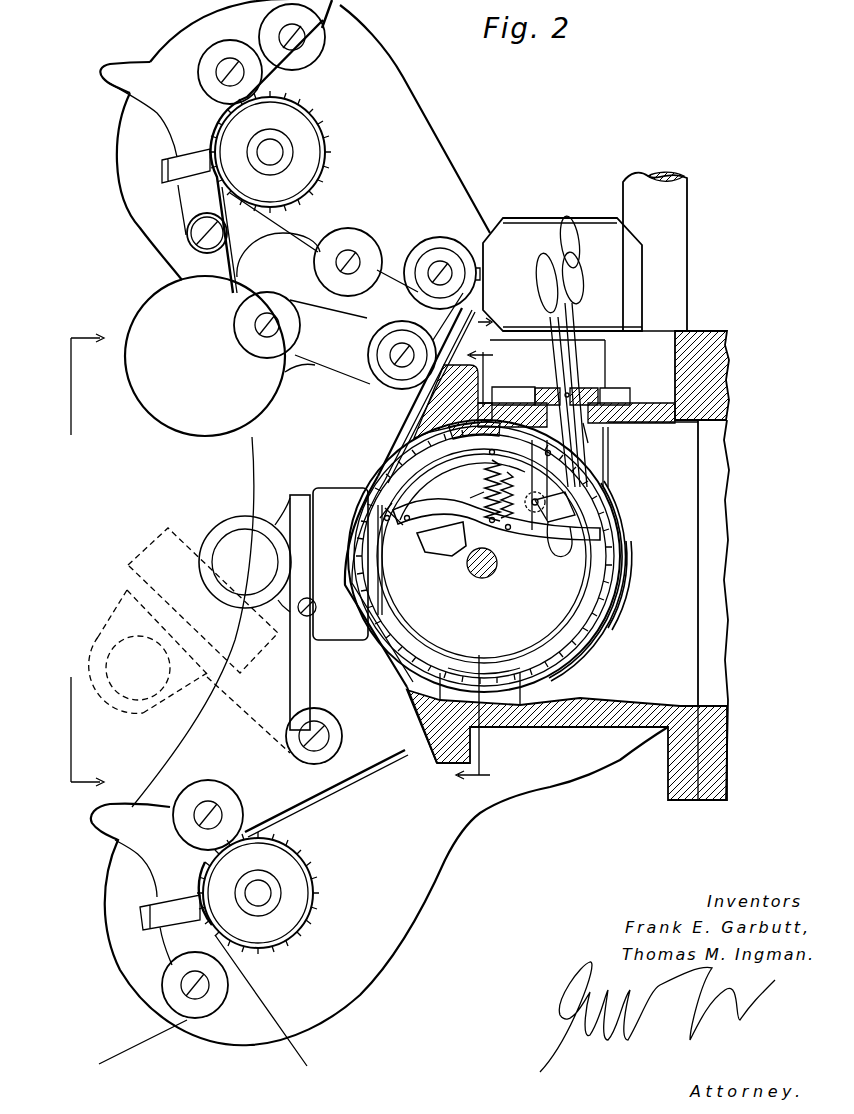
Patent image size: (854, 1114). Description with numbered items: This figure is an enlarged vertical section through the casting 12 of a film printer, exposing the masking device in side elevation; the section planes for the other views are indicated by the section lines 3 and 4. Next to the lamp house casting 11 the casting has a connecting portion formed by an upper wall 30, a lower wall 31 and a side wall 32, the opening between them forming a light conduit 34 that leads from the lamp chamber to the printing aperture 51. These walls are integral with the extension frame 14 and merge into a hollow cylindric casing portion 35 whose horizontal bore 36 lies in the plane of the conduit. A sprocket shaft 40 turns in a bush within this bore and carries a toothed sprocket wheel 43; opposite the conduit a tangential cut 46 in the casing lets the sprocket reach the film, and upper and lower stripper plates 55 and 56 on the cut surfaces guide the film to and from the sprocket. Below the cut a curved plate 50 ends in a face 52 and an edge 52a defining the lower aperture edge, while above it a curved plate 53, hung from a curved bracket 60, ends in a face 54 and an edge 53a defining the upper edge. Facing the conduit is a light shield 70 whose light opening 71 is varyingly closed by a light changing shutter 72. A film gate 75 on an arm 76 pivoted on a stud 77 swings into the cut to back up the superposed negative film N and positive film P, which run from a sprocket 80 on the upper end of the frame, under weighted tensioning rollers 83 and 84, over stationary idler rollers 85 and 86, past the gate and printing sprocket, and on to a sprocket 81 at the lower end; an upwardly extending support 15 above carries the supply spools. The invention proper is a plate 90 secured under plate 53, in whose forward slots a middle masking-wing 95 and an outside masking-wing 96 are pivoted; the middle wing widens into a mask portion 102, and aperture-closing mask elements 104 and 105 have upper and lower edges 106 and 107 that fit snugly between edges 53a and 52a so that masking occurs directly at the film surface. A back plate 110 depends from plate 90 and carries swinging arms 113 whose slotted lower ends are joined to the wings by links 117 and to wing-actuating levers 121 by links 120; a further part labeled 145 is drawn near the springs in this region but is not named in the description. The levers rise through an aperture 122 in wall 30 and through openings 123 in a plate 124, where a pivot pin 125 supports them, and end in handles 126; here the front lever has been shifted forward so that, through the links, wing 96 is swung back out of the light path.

The lamp house casting 11 is at (718, 385).
The casting 12 is at (558, 782).
The extension frame 14 is at (280, 455).
The upwardly extending support 15 is at (668, 255).
The upper wall 30 is at (662, 425).
The lower wall 31 is at (608, 708).
The side wall 32 is at (659, 521).
The light conduit 34 is at (686, 642).
The hollow cylindric casing portion 35 is at (510, 722).
The horizontal bore 36 is at (552, 695).
The sprocket shaft 40 is at (490, 578).
The sprocket wheel 43 is at (455, 642).
The rectangular opening or cut 46 is at (380, 682).
The curved plate 50 is at (392, 645).
The printing aperture 51 is at (380, 580).
The face 52 is at (352, 588).
The lower plate edge 52a is at (372, 595).
The curved plate 53 is at (420, 467).
The lower edge of plate 53 53a is at (375, 545).
The face 54 is at (358, 540).
The upper stripper plate 55 is at (410, 428).
The lower stripper plate 56 is at (430, 765).
The curved bracket 60 is at (498, 403).
The light shield 70 is at (610, 512).
The light opening 71 is at (600, 640).
The light changing shutter 72 is at (628, 582).
The film gate 75 is at (190, 552).
The arm 76 is at (315, 677).
The stud 77 is at (300, 762).
The sprocket 80 is at (300, 132).
The sprocket 81 is at (290, 885).
The tensioning roller 83 is at (250, 325).
The tensioning roller 84 is at (368, 252).
The stationary idler roller 85 is at (375, 363).
The stationary idler roller 86 is at (437, 258).
The plate 90 is at (420, 485).
The middle masking-wing 95 is at (375, 556).
The masking-wing 96 is at (443, 566).
The mask portion 102 is at (375, 568).
The aperture-closing mask element 104 is at (452, 560).
The aperture-closing mask element 105 is at (395, 590).
The upper edge 106 is at (355, 552).
The lower edge 107 is at (355, 572).
The back plate 110 is at (530, 475).
The swinging arm 113 is at (520, 510).
The link 117 is at (480, 525).
The link 120 is at (551, 533).
The wing-actuating lever 121 is at (618, 468).
The aperture 122 is at (588, 442).
The opening 123 is at (572, 390).
The plate 124 is at (612, 393).
The pivot pin 125 is at (552, 386).
The handle 126 is at (540, 263).
The spring seat 145 is at (468, 496).
The negative film N is at (272, 245).
The positive film P is at (400, 390).
The section line 3 is at (69, 564).
The section line 4 is at (480, 567).